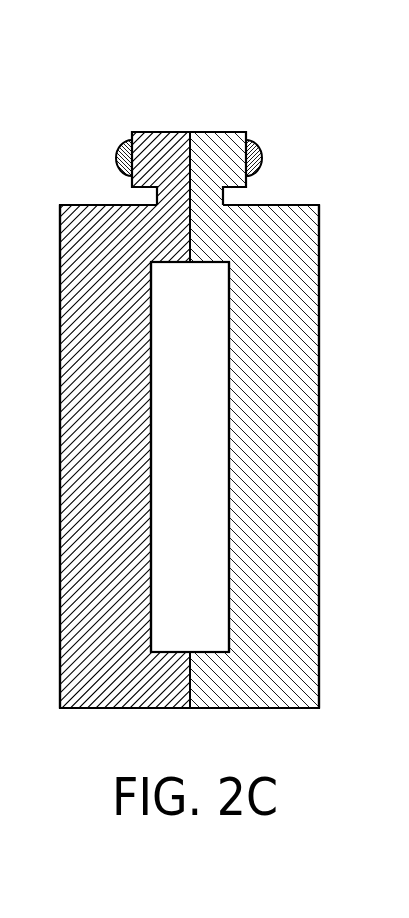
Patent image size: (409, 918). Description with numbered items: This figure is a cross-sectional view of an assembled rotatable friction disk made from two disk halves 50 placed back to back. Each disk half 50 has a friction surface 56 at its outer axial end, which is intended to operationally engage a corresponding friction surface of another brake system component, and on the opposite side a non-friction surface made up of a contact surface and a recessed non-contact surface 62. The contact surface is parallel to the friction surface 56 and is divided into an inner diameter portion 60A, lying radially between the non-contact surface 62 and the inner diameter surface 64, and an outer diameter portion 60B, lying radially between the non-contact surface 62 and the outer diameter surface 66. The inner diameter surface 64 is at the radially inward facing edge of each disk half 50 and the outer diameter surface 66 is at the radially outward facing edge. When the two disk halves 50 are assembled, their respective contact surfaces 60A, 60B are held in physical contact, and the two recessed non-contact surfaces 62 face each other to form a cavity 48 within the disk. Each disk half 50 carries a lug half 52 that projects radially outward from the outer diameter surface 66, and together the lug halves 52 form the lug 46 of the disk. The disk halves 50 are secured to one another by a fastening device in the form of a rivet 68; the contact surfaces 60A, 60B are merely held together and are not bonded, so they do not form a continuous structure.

The lug 46 is at (162, 120).
The cavity 48 is at (205, 525).
The disk half 50 is at (64, 192).
The lug half 52 is at (147, 131).
The friction surface 56 is at (59, 409).
The inner diameter portion of contact surface 60A is at (192, 694).
The outer diameter portion of contact surface 60B is at (190, 227).
The non-contact surface 62 is at (229, 383).
The inner diameter surface 64 is at (133, 708).
The outer diameter surface 66 is at (104, 203).
The rivet 68 is at (259, 150).